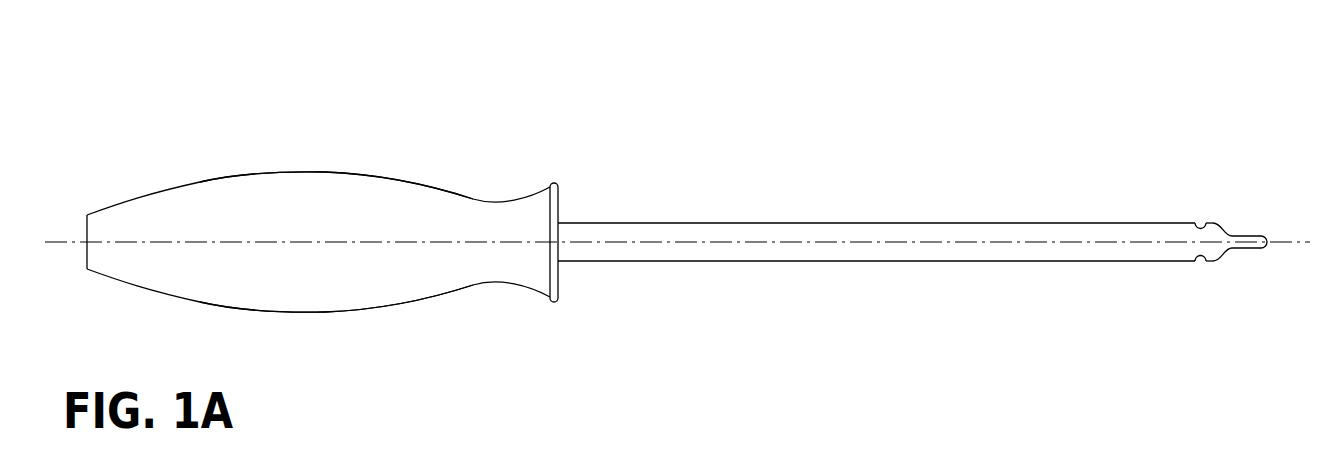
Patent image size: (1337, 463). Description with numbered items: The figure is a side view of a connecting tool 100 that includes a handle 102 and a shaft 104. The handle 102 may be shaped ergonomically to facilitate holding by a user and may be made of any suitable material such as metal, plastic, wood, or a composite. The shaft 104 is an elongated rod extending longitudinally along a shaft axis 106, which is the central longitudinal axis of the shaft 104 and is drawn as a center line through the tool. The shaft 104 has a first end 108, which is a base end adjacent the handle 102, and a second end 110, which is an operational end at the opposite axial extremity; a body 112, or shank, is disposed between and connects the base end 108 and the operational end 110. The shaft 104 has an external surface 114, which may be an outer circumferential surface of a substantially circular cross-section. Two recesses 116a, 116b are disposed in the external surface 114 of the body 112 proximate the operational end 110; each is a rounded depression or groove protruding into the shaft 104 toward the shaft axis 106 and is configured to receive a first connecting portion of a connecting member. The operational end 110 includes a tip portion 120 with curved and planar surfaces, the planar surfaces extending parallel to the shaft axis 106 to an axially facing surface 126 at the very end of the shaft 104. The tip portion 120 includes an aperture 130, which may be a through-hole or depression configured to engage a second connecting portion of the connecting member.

The connecting tool 100 is at (691, 194).
The handle 102 is at (318, 209).
The shaft 104 is at (947, 234).
The shaft axis 106 is at (326, 240).
The first end 108 is at (563, 219).
The second end 110 is at (1218, 234).
The body 112 is at (940, 232).
The external surface 114 is at (846, 236).
The recess 116a is at (1197, 225).
The recess 116b is at (1200, 260).
The tip portion 120 is at (1271, 241).
The axially facing surface 126 is at (1268, 238).
The aperture 130 is at (1240, 230).